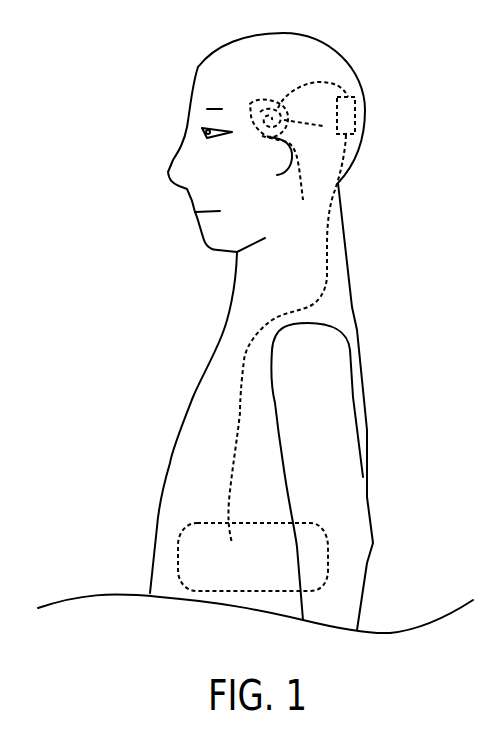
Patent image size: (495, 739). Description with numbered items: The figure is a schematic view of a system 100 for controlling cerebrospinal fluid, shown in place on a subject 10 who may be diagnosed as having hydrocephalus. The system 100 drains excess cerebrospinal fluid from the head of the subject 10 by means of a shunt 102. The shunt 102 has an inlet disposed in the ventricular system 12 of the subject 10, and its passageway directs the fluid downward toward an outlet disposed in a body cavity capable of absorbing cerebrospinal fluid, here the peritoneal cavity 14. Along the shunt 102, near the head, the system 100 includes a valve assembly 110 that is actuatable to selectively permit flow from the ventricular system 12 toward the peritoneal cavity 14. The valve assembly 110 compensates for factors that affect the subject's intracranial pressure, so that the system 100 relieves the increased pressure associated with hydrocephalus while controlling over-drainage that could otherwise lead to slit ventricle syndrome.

The subject 10 is at (133, 143).
The ventricular system 12 is at (249, 103).
The peritoneal cavity 14 is at (177, 543).
The system 100 is at (353, 231).
The shunt 102 is at (330, 277).
The valve assembly 110 is at (355, 110).